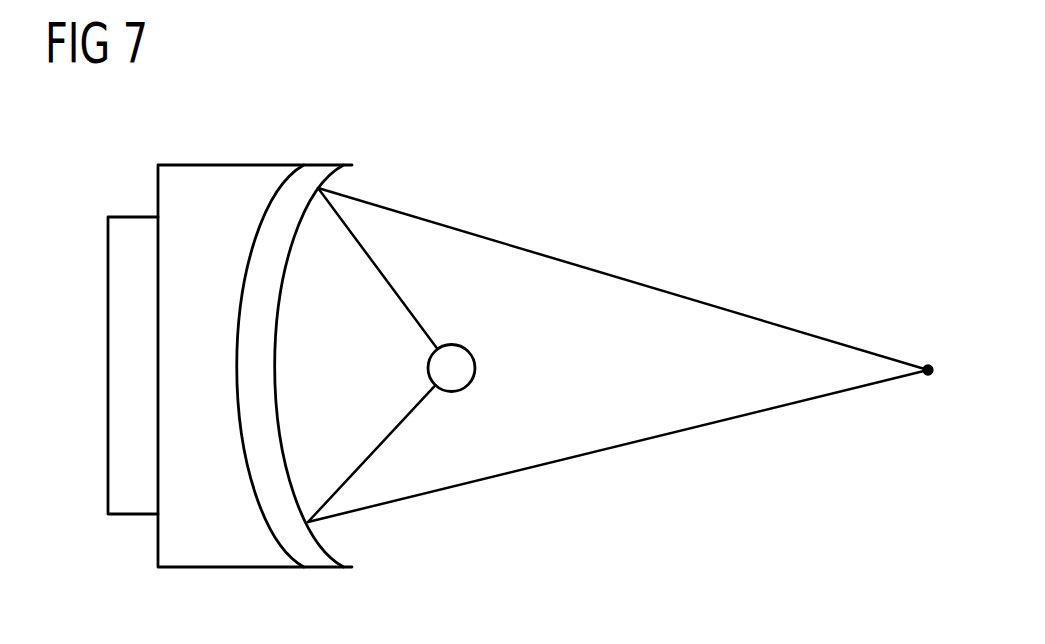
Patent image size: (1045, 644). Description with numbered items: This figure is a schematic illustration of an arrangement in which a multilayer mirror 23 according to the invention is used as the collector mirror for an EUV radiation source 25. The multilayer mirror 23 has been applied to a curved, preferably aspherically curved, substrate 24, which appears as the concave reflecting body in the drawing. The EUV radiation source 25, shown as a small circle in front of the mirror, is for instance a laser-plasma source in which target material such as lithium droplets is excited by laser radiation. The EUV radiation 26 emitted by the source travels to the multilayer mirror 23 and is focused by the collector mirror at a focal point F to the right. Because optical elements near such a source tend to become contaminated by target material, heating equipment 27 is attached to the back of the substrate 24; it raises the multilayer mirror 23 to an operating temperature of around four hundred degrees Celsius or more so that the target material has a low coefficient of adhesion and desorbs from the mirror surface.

The multilayer mirror 23 is at (268, 345).
The substrate 24 is at (223, 177).
The EUV radiation source 25 is at (474, 370).
The EUV radiation 26 is at (398, 426).
The heating equipment 27 is at (118, 357).
The focal point F is at (932, 392).